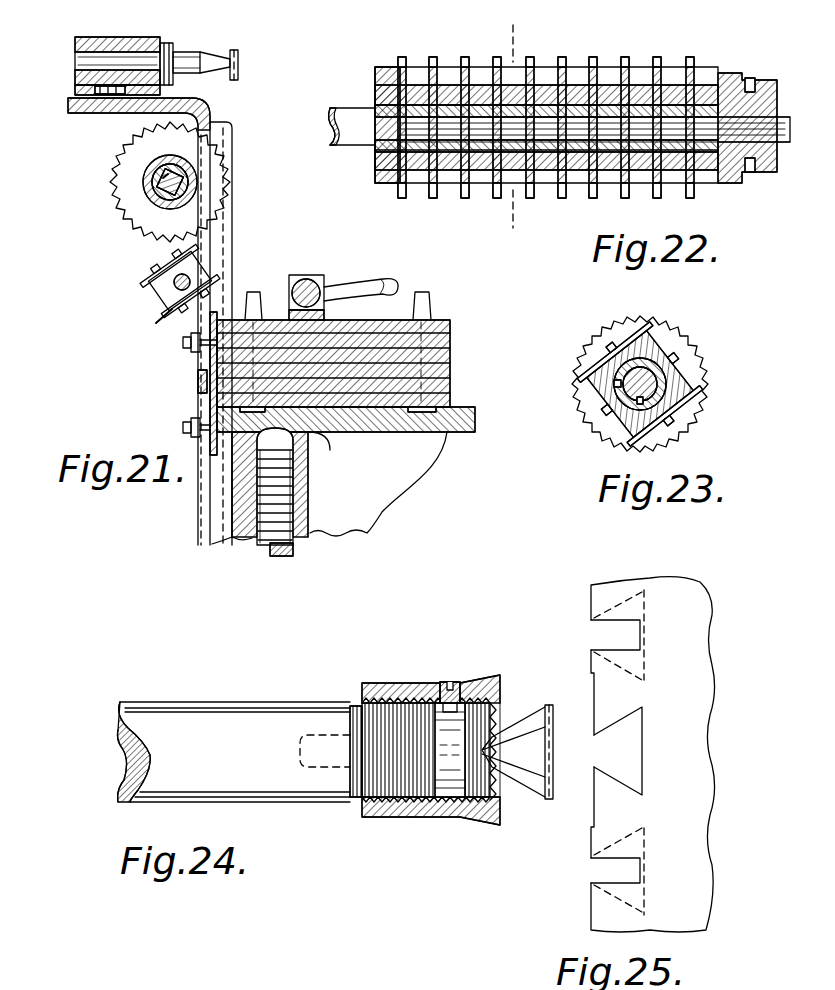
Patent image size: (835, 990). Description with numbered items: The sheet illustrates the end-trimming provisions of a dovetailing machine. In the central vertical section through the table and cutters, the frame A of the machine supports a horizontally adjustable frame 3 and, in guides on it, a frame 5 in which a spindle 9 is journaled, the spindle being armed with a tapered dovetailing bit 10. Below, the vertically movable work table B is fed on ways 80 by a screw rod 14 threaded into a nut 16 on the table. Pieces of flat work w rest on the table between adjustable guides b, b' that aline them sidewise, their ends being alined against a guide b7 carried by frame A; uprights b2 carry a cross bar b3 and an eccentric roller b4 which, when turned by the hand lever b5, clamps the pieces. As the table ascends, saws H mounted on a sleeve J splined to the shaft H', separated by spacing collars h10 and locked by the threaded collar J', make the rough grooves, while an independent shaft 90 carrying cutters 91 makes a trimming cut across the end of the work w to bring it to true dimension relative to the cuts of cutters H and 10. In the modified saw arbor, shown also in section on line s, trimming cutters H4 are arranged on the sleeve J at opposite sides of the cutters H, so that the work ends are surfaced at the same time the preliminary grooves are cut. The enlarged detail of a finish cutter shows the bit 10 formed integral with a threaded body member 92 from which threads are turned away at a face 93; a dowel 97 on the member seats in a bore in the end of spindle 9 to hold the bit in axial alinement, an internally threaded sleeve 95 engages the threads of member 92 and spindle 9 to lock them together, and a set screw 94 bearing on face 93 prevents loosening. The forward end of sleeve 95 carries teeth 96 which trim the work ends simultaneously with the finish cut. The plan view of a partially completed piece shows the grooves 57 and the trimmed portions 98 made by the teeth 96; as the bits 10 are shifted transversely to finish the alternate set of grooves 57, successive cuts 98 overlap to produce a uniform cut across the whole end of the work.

In FIG. 21, the spindle 9 is at (73, 60).
In FIG. 24, the spindle 9 is at (165, 696).
In FIG. 21, the dovetailing bit 10 is at (240, 58).
In FIG. 24, the dovetailing bit 10 is at (561, 781).
In FIG. 21, the frame 5 is at (72, 90).
In FIG. 21, the horizontally adjustable frame 3 is at (72, 104).
In FIG. 21, the frame of the machine A is at (63, 143).
In FIG. 21, the ways 80 is at (236, 226).
In FIG. 21, the saws or cutter heads H is at (151, 182).
In FIG. 22, the saws or cutter heads H is at (546, 111).
In FIG. 23, the saws or cutter heads H is at (664, 384).
In FIG. 21, the sleeve J is at (129, 182).
In FIG. 22, the sleeve J is at (528, 121).
In FIG. 23, the sleeve J is at (671, 397).
In FIG. 21, the shaft H' is at (134, 172).
In FIG. 22, the shaft H' is at (559, 94).
In FIG. 23, the shaft H' is at (624, 345).
In FIG. 21, the spacing collars h10 is at (152, 196).
In FIG. 21, the independent shaft 90 is at (167, 290).
In FIG. 21, the cutters 91 is at (165, 320).
In FIG. 21, the guide b7 is at (200, 404).
In FIG. 21, the work w is at (454, 336).
In FIG. 25, the work w is at (710, 630).
In FIG. 21, the adjustable guide b is at (256, 288).
In FIG. 21, the adjustable guide b' is at (437, 288).
In FIG. 21, the eccentric roller b4 is at (306, 272).
In FIG. 21, the cross bar b3 is at (330, 300).
In FIG. 21, the hand lever b5 is at (378, 280).
In FIG. 21, the work table B is at (478, 413).
In FIG. 21, the uprights b2 is at (320, 382).
In FIG. 21, the nut 16 is at (312, 495).
In FIG. 21, the screw rod 14 is at (282, 560).
In FIG. 22, the trimming cutters H4 is at (707, 60).
In FIG. 23, the trimming cutters H4 is at (690, 385).
In FIG. 22, the nut or threaded collar J' is at (747, 108).
In FIG. 22, the section line s is at (512, 128).
In FIG. 24, the dowel or stem 97 is at (330, 760).
In FIG. 24, the internally threaded sleeve 95 is at (394, 822).
In FIG. 24, the turned-away face 93 is at (451, 775).
In FIG. 24, the set screw 94 is at (449, 675).
In FIG. 24, the teeth or cutters 96 is at (486, 822).
In FIG. 24, the threaded body member 92 is at (496, 784).
In FIG. 25, the grooves 57 is at (588, 633).
In FIG. 25, the trimmed portion 98 is at (592, 704).